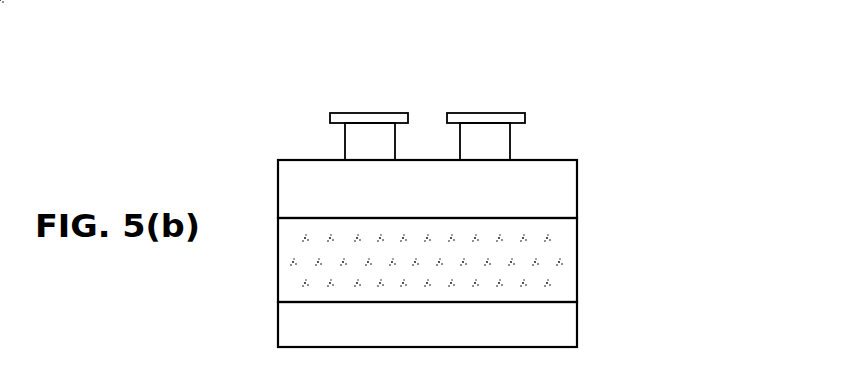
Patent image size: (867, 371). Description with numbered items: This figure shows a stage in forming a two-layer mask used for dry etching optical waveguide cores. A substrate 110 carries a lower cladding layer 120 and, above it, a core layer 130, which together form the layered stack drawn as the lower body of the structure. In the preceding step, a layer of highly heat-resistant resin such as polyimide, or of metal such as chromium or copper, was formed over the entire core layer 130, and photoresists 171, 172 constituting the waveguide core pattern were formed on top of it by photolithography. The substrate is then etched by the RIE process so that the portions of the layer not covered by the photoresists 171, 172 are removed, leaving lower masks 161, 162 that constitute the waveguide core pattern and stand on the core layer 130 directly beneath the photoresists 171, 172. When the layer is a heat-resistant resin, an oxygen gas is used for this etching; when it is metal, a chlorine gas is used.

The substrate 110 is at (563, 323).
The lower cladding layer 120 is at (563, 260).
The core layer 130 is at (563, 200).
The lower mask 161 is at (357, 150).
The lower mask 162 is at (495, 155).
The photoresist 171 is at (372, 120).
The photoresist 172 is at (502, 122).